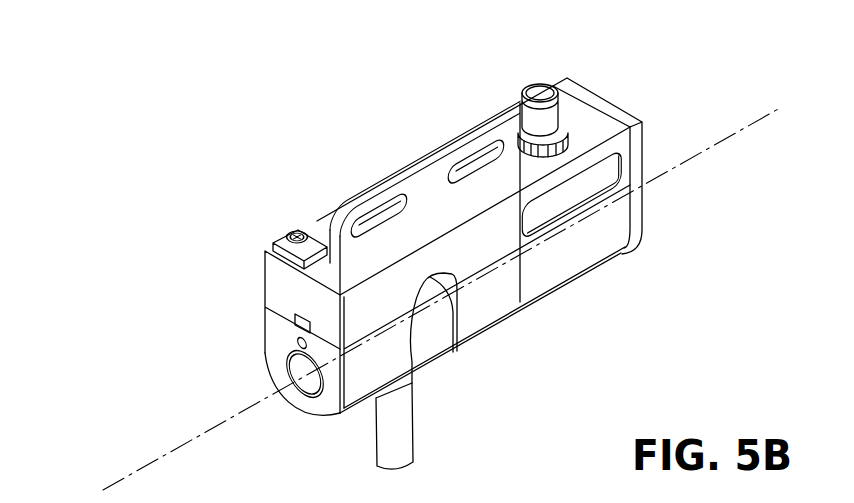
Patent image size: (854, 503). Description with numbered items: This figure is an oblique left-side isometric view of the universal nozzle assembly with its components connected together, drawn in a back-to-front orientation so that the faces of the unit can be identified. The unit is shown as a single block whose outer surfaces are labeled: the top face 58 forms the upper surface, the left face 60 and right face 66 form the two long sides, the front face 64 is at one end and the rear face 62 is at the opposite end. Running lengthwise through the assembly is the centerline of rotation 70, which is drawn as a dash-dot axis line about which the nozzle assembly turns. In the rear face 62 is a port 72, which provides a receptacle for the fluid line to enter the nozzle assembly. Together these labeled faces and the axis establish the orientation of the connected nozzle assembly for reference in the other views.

The top face 58 is at (581, 122).
The left face 60 is at (498, 285).
The rear face 62 is at (322, 405).
The front face 64 is at (643, 128).
The right face 66 is at (517, 117).
The centerline of rotation 70 is at (187, 441).
The port 72 is at (296, 369).